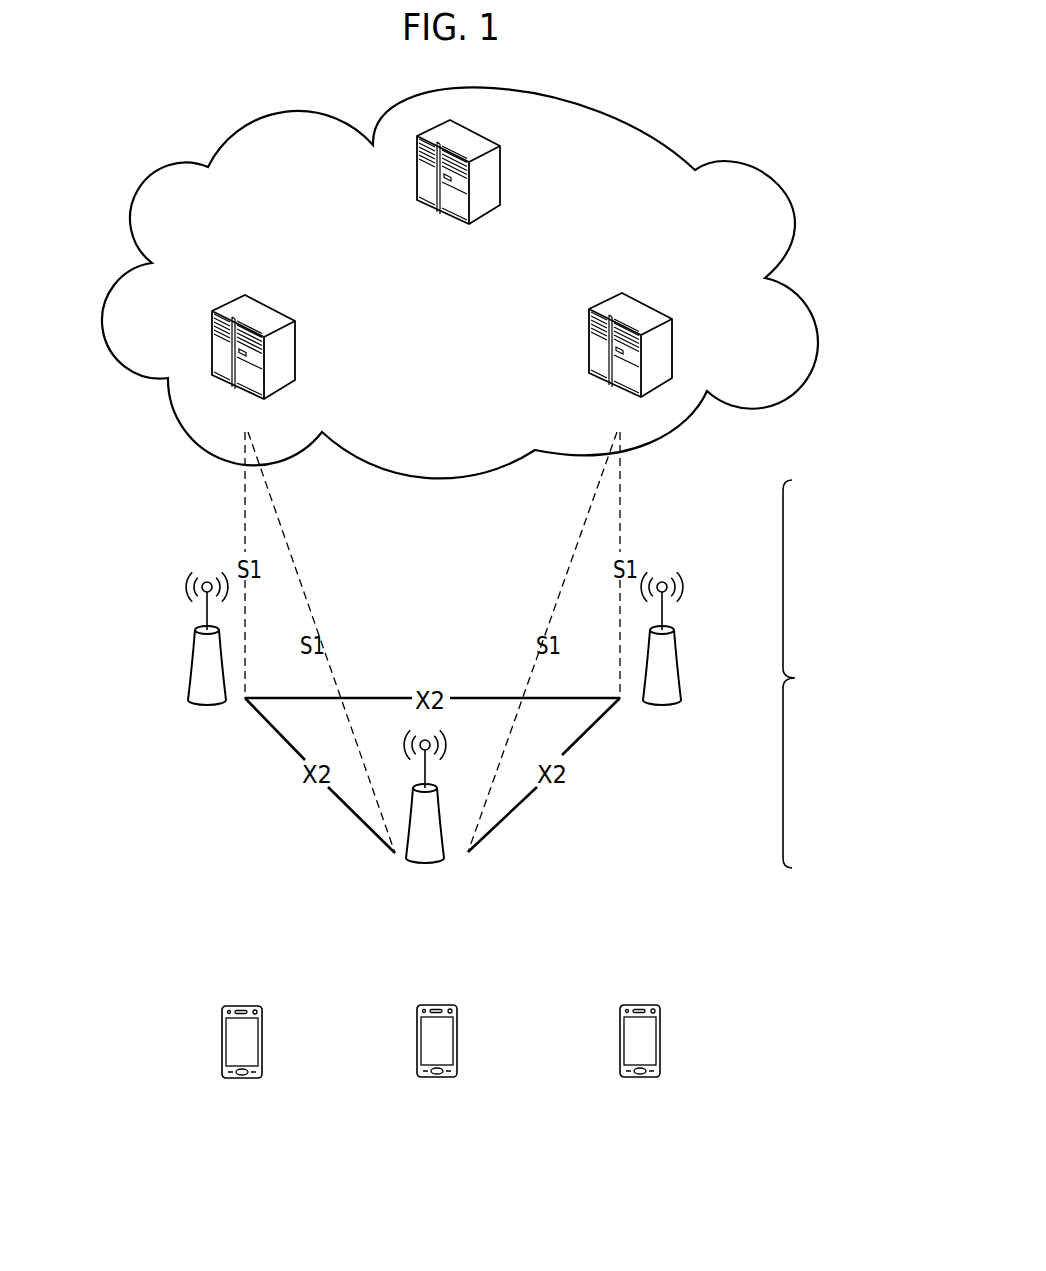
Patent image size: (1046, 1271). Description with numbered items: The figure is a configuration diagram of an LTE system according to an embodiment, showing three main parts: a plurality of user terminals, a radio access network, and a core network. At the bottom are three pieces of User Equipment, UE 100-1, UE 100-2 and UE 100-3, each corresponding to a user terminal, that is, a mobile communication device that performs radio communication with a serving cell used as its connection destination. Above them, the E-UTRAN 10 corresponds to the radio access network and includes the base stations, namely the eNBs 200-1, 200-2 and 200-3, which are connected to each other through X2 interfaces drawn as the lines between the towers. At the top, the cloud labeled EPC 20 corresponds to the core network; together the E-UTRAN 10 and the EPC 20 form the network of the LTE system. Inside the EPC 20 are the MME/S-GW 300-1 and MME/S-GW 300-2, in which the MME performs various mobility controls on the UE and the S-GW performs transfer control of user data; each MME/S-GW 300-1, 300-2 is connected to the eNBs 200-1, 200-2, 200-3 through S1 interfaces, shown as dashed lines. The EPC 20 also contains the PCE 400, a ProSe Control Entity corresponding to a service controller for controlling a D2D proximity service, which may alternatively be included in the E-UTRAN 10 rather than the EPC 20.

The E-UTRAN 10 is at (841, 674).
The EPC 20 is at (673, 137).
The UE 100-1 is at (254, 1005).
The UE 100-2 is at (437, 1004).
The UE 100-3 is at (645, 1004).
The eNB 200-1 is at (190, 665).
The eNB 200-2 is at (443, 832).
The eNB 200-3 is at (677, 643).
The MME/S-GW 300-1 is at (275, 305).
The MME/S-GW 300-2 is at (660, 280).
The PCE 400 is at (504, 187).